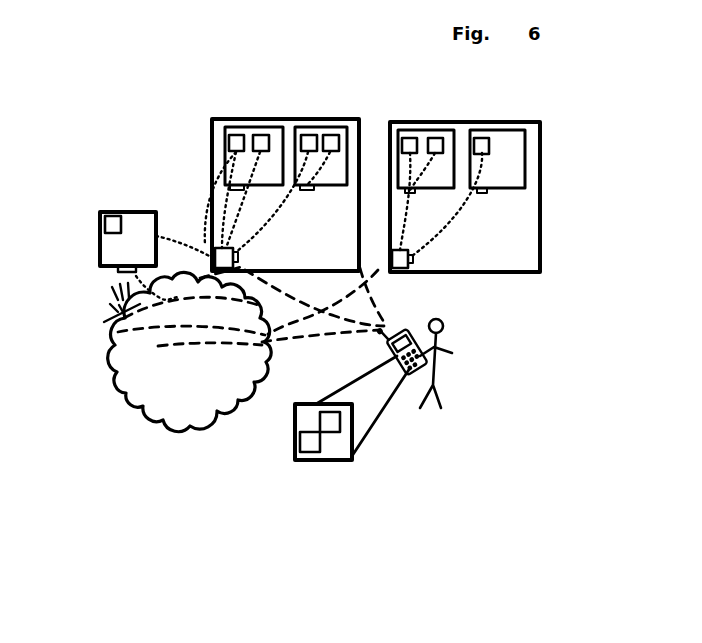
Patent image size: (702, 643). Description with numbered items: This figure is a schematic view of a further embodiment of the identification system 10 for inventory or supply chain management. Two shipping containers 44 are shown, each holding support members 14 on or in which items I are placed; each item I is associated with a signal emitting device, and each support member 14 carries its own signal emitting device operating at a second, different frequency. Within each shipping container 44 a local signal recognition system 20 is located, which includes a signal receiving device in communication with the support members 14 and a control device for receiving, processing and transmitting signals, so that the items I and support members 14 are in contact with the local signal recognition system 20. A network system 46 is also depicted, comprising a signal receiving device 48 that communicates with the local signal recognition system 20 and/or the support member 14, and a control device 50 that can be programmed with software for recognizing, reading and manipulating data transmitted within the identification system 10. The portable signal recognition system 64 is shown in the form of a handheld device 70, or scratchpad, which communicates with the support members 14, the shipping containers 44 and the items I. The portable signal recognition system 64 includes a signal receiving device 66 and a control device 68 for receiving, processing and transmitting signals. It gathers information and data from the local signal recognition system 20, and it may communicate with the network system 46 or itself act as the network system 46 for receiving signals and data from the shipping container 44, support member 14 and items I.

The identification system 10 is at (82, 355).
The support member 14 is at (250, 124).
The item I is at (242, 134).
The local signal recognition system 20 is at (206, 250).
The shipping container 44 is at (372, 130).
The network system 46 is at (129, 206).
The signal receiving device 48 is at (112, 272).
The control device 50 is at (102, 223).
The portable signal recognition system 64 is at (404, 316).
The signal receiving device 66 is at (320, 418).
The control device 68 is at (300, 445).
The handheld device 70 is at (410, 374).